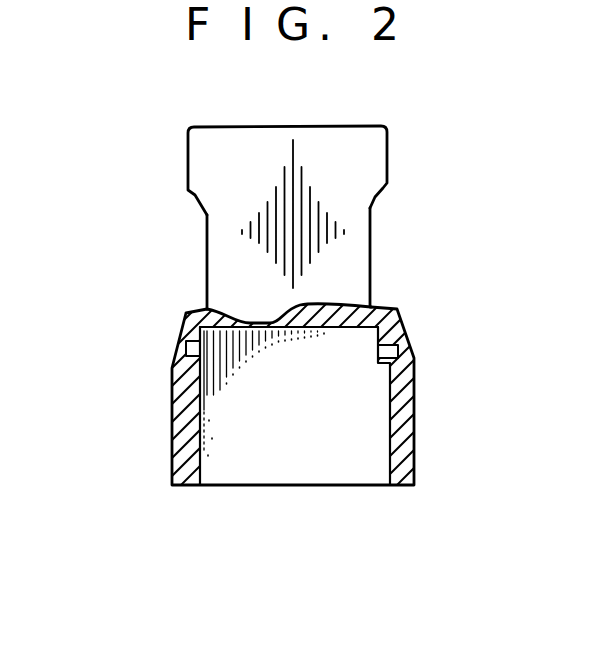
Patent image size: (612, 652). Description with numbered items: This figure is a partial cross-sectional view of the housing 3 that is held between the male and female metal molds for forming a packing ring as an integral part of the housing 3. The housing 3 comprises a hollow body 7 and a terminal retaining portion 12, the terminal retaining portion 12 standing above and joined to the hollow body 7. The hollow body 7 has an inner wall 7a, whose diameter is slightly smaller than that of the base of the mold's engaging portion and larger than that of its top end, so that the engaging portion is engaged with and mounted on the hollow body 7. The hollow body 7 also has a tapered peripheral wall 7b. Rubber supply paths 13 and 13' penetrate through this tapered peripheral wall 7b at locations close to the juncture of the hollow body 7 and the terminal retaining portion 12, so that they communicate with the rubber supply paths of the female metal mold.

The housing 3 is at (281, 217).
The terminal retaining portion 12 is at (206, 243).
The hollow body 7 is at (301, 394).
The inner wall 7a is at (200, 452).
The tapered peripheral wall 7b is at (400, 315).
The rubber supply path 13 is at (437, 339).
The rubber supply path 13' is at (140, 346).